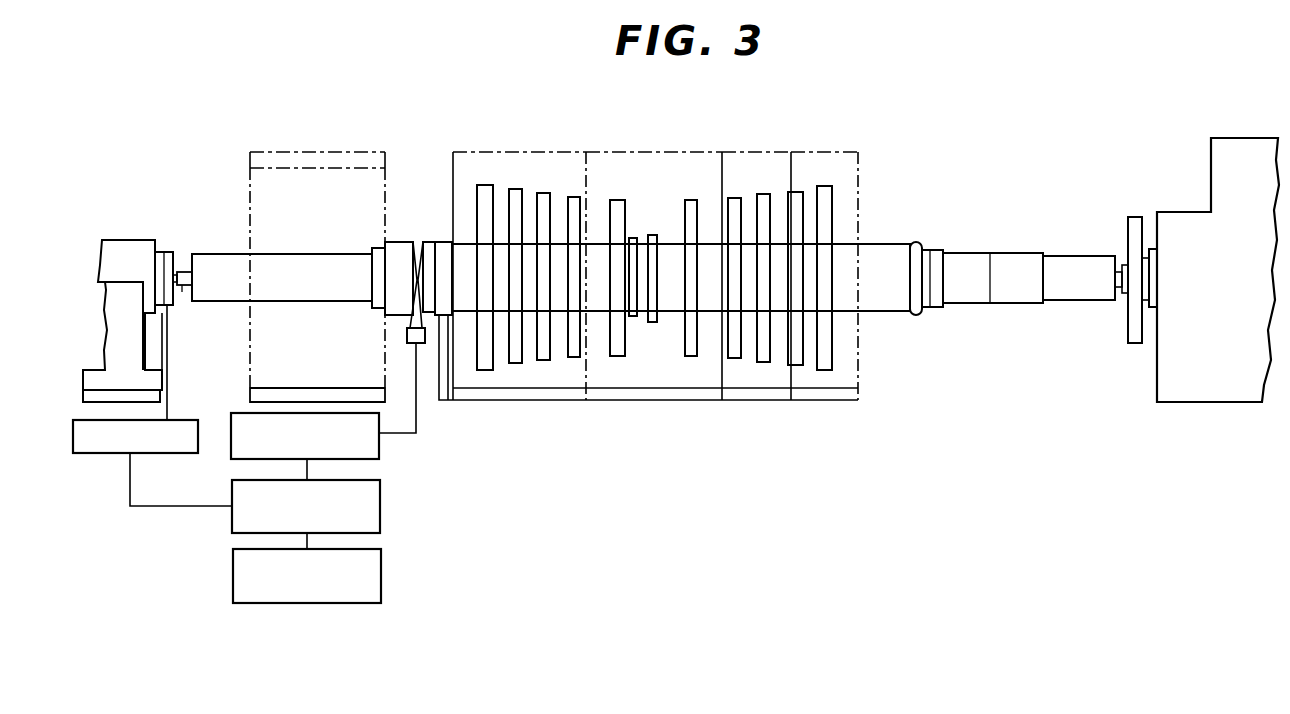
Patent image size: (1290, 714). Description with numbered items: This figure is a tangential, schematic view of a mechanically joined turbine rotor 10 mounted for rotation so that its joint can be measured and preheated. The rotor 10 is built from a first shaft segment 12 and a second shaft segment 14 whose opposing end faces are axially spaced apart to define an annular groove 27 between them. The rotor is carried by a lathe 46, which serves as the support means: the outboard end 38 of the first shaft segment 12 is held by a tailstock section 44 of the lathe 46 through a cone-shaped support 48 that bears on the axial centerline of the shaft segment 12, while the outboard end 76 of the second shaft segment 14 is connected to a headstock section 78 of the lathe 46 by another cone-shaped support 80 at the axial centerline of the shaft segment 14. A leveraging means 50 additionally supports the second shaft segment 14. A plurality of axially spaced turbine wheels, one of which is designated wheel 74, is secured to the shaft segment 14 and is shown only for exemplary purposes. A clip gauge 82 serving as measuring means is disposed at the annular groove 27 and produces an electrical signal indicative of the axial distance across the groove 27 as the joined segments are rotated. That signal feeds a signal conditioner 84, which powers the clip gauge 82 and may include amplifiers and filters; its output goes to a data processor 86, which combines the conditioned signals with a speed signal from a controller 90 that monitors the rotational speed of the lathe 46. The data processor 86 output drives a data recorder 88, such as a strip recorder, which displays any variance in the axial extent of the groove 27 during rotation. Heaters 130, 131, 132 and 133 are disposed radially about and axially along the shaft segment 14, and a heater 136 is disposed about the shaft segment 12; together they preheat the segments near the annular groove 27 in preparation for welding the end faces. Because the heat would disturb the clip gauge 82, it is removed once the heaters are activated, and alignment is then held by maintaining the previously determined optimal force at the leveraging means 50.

The turbine rotor 10 is at (513, 183).
The first shaft segment 12 is at (315, 254).
The second shaft segment 14 is at (460, 243).
The annular groove 27 is at (413, 250).
The outboard end of shaft segment 12 38 is at (188, 272).
The tailstock section 44 is at (166, 252).
The lathe 46 is at (121, 240).
The cone-shaped support 48 is at (183, 292).
The leveraging means 50 is at (439, 400).
The turbine wheel 74 is at (545, 193).
The outboard end of shaft segment 14 76 is at (1122, 265).
The headstock section 78 is at (1133, 217).
The cone-shaped support 80 is at (1122, 297).
The clip gauge 82 is at (409, 343).
The signal conditioner 84 is at (379, 453).
The data processor 86 is at (380, 510).
The data recorder 88 is at (381, 580).
The controller 90 is at (103, 453).
The heater 130 is at (537, 152).
The heater 131 is at (667, 152).
The heater 132 is at (767, 152).
The heater 133 is at (838, 152).
The heater 136 is at (356, 152).